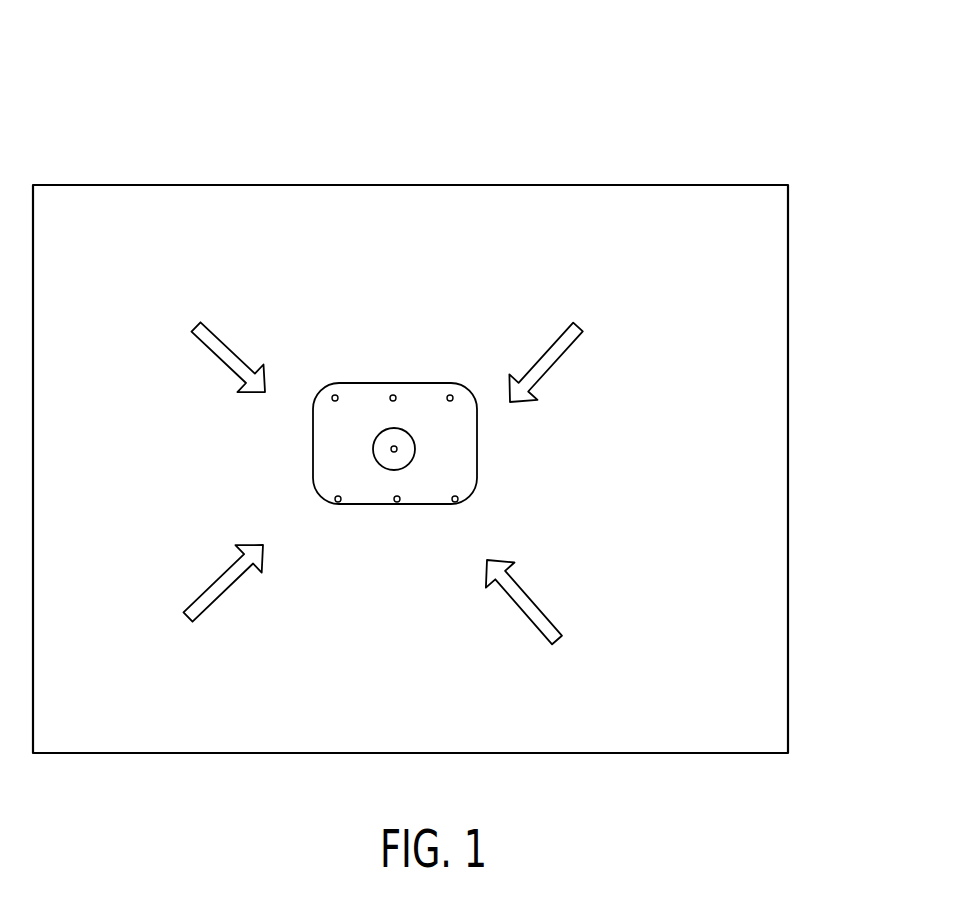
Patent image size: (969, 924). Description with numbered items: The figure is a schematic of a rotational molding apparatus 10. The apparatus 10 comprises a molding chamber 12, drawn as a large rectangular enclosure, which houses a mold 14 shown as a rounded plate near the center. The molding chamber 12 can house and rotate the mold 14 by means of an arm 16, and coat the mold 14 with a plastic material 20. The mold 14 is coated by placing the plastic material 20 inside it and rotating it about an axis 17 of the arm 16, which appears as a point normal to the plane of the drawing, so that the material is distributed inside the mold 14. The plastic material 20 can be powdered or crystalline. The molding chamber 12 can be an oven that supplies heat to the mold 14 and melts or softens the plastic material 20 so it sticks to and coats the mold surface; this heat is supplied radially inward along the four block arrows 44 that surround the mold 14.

The rotational molding apparatus 10 is at (566, 77).
The molding chamber 12 is at (572, 185).
The mold 14 is at (478, 455).
The arm 16 is at (396, 452).
The axis 17 is at (392, 448).
The plastic material 20 is at (452, 395).
The block arrows 44 is at (222, 362).